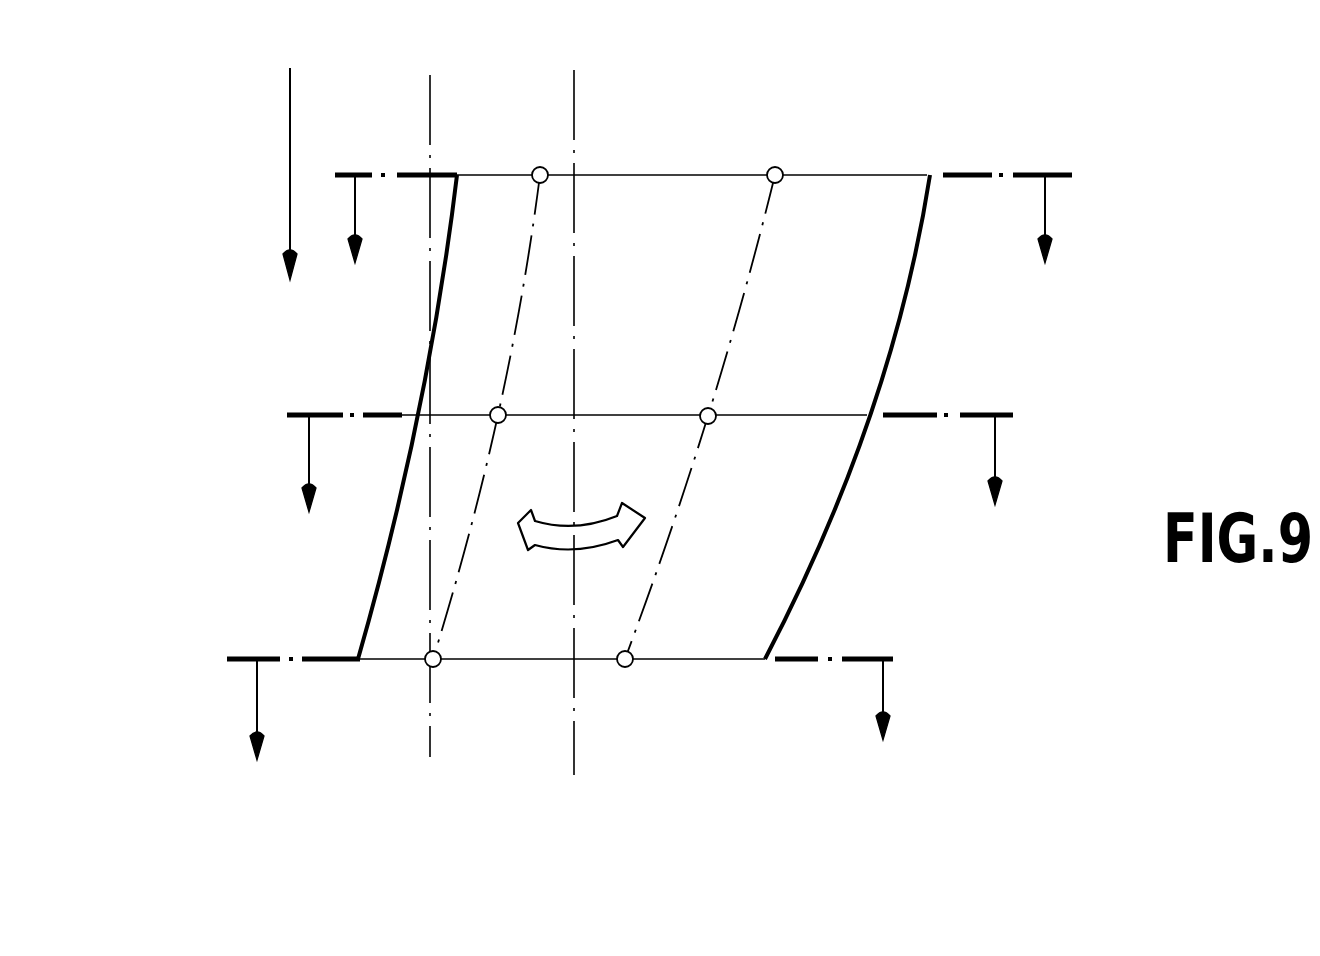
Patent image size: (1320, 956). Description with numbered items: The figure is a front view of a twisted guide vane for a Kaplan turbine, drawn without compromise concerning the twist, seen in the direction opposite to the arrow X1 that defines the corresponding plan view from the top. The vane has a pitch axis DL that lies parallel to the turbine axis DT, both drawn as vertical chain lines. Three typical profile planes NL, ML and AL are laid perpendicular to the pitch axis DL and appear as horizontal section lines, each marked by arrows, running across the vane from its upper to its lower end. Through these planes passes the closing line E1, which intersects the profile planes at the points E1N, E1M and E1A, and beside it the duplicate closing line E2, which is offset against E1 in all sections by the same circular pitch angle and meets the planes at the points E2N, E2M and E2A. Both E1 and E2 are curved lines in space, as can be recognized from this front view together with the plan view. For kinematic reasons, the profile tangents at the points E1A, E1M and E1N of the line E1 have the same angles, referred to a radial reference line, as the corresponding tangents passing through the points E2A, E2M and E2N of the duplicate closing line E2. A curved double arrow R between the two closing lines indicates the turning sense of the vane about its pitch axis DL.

The viewing direction arrow X1 is at (290, 153).
The profile plane N_L NL is at (703, 251).
The profile plane M_L ML is at (661, 491).
The profile plane A_L AL is at (573, 740).
The turbine axis DT is at (432, 735).
The pitch axis DL is at (575, 710).
The closing line E1 is at (523, 288).
The duplicate closing line E2 is at (742, 297).
The point of closing line E1 in plane N_L E1N is at (540, 167).
The point of duplicate closing line E2 in plane N_L E2N is at (778, 167).
The point of closing line E1 in plane M_L E1M is at (505, 410).
The point of duplicate closing line E2 in plane M_L E2M is at (714, 424).
The point of closing line E1 in plane A_L E1A is at (428, 665).
The point of duplicate closing line E2 in plane A_L E2A is at (630, 652).
The rotation direction arrow R is at (594, 523).